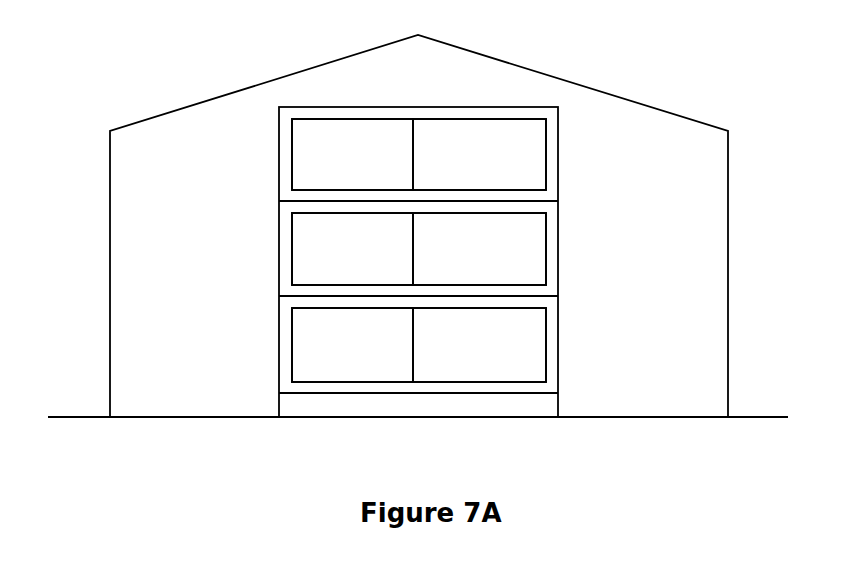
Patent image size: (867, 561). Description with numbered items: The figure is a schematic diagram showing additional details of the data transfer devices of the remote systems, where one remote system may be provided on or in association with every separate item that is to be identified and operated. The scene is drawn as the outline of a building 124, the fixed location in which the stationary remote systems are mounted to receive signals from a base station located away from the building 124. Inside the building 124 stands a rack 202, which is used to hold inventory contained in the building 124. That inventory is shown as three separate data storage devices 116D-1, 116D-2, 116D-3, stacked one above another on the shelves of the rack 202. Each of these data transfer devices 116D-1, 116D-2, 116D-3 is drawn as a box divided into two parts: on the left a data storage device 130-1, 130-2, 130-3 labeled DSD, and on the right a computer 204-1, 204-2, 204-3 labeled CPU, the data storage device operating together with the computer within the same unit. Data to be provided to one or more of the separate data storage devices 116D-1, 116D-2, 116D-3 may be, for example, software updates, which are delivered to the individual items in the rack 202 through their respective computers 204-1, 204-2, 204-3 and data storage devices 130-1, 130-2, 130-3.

The building 124 is at (110, 283).
The rack 202 is at (279, 356).
The data transfer device 116D-1 is at (546, 154).
The data transfer device 116D-2 is at (546, 273).
The data transfer device 116D-3 is at (546, 344).
The data storage device 130-1 is at (365, 130).
The data storage device 130-2 is at (305, 237).
The data storage device 130-3 is at (305, 320).
The computer 204-1 is at (484, 130).
The computer 204-2 is at (533, 225).
The computer 204-3 is at (473, 367).